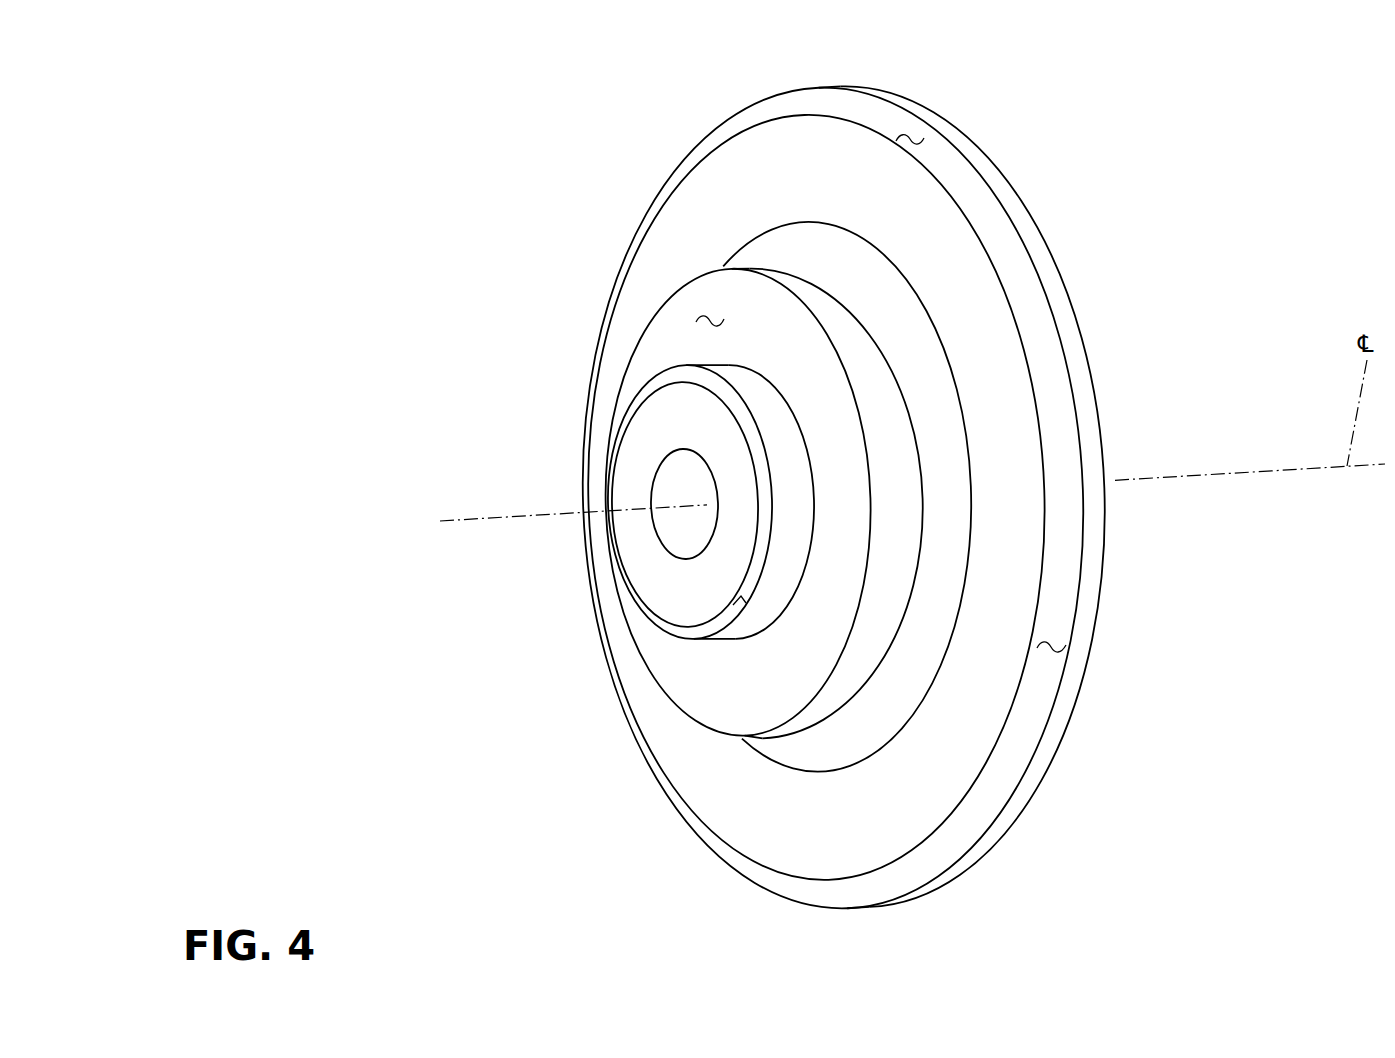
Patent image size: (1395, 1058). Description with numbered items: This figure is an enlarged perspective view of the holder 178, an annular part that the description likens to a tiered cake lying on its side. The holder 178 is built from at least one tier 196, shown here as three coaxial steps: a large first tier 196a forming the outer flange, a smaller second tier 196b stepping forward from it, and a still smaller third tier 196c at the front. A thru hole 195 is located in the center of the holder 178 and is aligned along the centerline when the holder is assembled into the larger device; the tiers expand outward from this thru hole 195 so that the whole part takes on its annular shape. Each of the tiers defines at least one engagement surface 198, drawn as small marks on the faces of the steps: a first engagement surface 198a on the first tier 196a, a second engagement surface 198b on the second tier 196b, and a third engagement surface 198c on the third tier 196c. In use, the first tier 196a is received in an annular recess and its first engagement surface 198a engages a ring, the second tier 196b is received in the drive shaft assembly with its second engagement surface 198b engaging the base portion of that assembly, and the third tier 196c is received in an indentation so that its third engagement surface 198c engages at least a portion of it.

The holder 178 is at (437, 87).
The at least one tier 196 is at (784, 168).
The first tier 196a is at (966, 283).
The second tier 196b is at (748, 303).
The third tier 196c is at (658, 576).
The thru hole 195 is at (673, 518).
The at least one engagement surface 198 is at (1049, 658).
The first engagement surface 198a is at (913, 142).
The second engagement surface 198b is at (703, 324).
The third engagement surface 198c is at (738, 600).